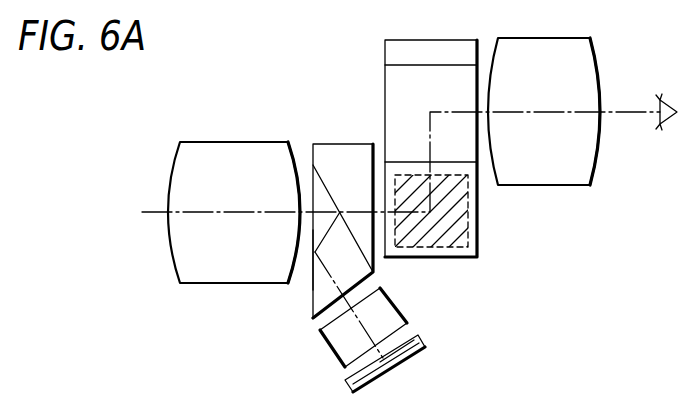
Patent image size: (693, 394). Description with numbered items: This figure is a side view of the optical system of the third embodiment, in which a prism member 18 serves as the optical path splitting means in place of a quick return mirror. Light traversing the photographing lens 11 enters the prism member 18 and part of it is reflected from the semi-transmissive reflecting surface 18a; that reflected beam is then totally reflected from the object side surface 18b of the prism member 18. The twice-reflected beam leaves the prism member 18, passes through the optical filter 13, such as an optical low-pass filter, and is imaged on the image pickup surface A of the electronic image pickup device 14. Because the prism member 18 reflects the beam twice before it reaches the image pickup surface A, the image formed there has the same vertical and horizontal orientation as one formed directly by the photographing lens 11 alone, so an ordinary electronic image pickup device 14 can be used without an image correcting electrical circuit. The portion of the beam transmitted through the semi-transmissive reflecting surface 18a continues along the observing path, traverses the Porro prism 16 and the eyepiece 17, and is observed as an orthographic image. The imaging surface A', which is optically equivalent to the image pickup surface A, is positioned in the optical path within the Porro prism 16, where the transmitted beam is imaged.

The photographing lens 11 is at (203, 142).
The optical filter 13 is at (322, 331).
The electronic image pickup device 14 is at (410, 359).
The Porro prism 16 is at (478, 250).
The eyepiece 17 is at (577, 38).
The prism member 18 is at (364, 144).
The semi-transmissive reflecting surface 18a is at (330, 180).
The object side surface 18b is at (319, 269).
The image pickup surface A is at (407, 327).
The imaging surface A' is at (467, 220).